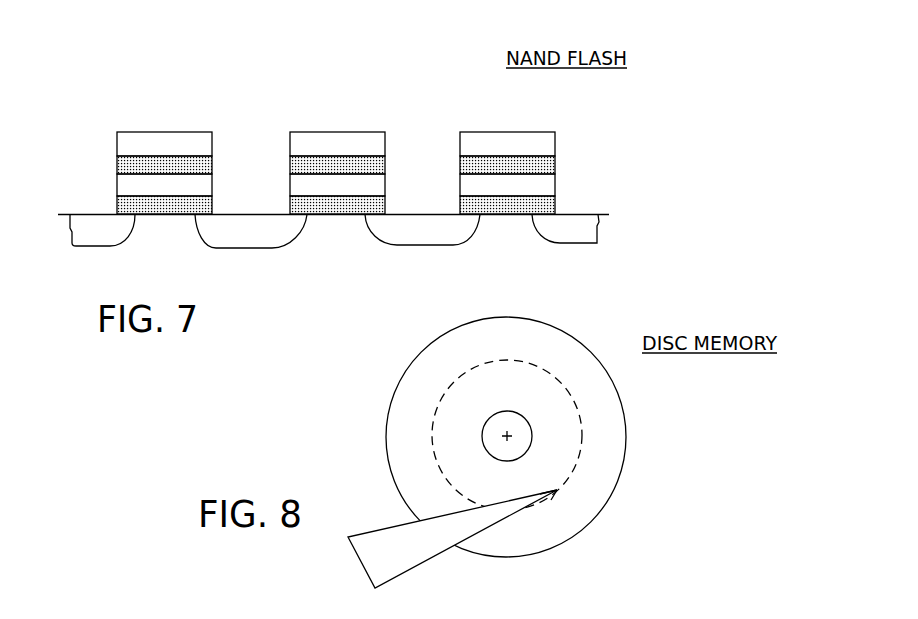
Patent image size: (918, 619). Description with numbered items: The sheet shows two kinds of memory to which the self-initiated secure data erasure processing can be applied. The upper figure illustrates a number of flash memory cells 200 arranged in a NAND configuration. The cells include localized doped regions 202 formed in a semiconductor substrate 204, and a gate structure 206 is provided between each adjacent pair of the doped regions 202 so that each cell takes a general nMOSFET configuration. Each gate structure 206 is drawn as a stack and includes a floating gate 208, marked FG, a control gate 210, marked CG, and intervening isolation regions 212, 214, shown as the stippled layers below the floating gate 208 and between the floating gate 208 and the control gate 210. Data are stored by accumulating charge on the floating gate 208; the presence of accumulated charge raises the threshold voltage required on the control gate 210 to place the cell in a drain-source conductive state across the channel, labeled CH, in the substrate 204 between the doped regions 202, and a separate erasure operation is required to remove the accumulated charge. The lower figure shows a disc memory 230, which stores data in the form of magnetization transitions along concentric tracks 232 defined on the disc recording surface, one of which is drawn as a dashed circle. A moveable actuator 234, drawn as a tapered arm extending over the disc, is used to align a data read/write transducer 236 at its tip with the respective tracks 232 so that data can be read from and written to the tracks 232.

In FIG. 7, the flash memory cells 200 is at (123, 78).
In FIG. 7, the localized doped regions 202 is at (254, 250).
In FIG. 7, the semiconductor substrate 204 is at (170, 256).
In FIG. 7, the gate structure 206 is at (310, 118).
In FIG. 7, the floating gate 208 is at (289, 185).
In FIG. 7, the control gate 210 is at (335, 131).
In FIG. 7, the isolation region 212 is at (386, 205).
In FIG. 7, the isolation region 214 is at (386, 164).
In FIG. 8, the disc memory 230 is at (562, 334).
In FIG. 8, the concentric tracks 232 is at (456, 386).
In FIG. 8, the moveable actuator 234 is at (420, 553).
In FIG. 8, the data read/write transducer 236 is at (559, 494).